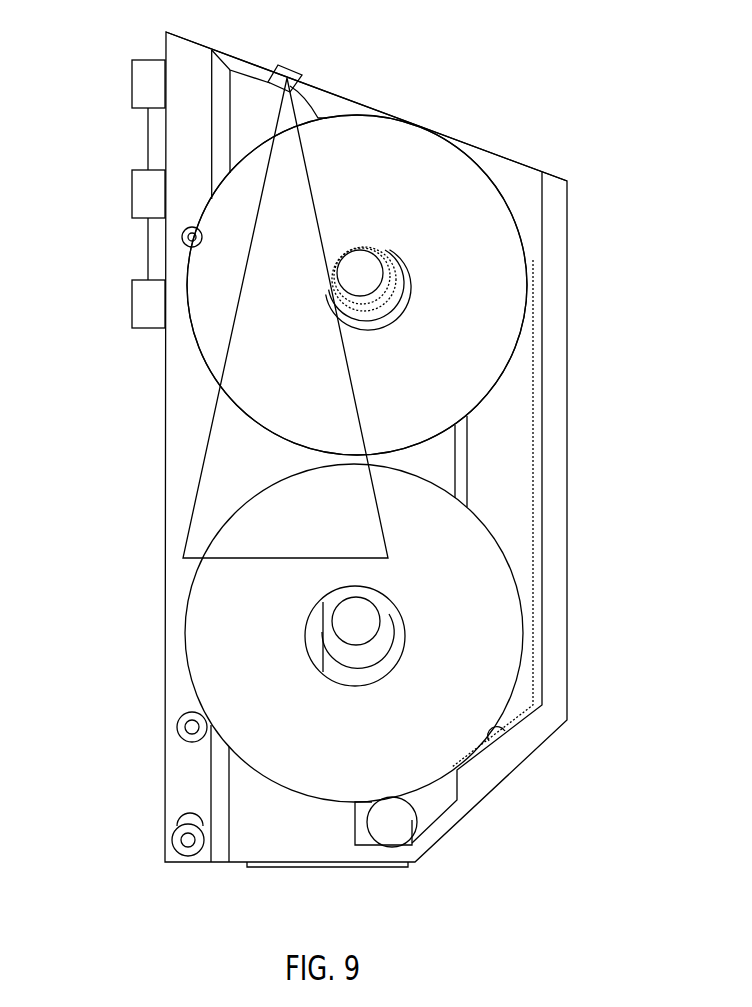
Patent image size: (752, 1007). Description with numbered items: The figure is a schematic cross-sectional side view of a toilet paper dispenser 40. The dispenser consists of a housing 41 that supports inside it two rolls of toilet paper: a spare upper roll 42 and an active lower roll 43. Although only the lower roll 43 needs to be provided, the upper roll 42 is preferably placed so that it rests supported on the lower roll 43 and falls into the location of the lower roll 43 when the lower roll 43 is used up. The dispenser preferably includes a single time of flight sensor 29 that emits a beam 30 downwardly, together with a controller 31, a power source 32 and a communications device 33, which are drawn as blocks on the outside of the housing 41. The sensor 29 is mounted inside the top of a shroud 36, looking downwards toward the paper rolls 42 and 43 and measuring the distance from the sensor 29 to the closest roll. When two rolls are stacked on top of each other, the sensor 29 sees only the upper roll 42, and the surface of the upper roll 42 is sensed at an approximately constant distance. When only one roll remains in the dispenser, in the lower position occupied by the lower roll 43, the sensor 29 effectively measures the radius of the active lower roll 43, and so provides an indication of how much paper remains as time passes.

The time of flight sensor 29 is at (285, 72).
The beam 30 is at (310, 137).
The controller 31 is at (131, 82).
The power source 32 is at (131, 193).
The communications device 33 is at (131, 305).
The shroud 36 is at (330, 90).
The toilet paper dispenser 40 is at (616, 132).
The housing 41 is at (167, 237).
The spare upper roll 42 is at (442, 172).
The active lower roll 43 is at (500, 593).